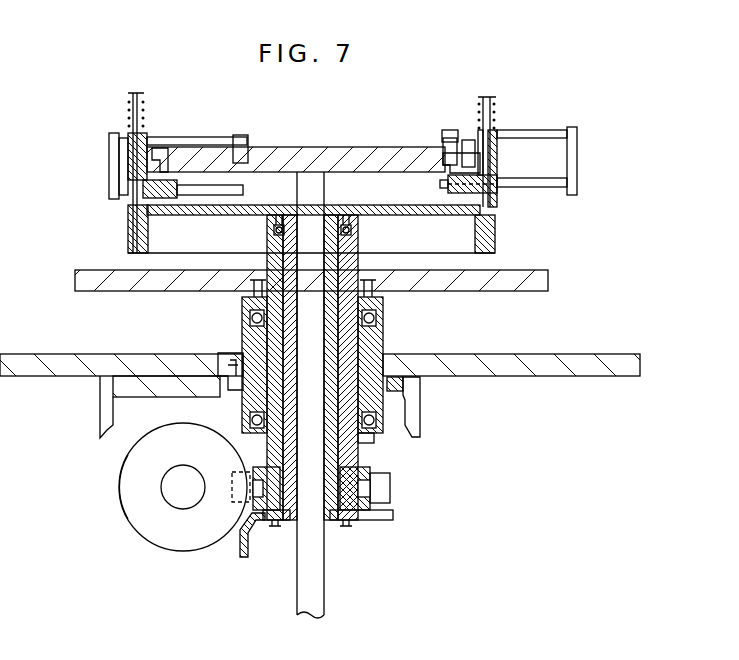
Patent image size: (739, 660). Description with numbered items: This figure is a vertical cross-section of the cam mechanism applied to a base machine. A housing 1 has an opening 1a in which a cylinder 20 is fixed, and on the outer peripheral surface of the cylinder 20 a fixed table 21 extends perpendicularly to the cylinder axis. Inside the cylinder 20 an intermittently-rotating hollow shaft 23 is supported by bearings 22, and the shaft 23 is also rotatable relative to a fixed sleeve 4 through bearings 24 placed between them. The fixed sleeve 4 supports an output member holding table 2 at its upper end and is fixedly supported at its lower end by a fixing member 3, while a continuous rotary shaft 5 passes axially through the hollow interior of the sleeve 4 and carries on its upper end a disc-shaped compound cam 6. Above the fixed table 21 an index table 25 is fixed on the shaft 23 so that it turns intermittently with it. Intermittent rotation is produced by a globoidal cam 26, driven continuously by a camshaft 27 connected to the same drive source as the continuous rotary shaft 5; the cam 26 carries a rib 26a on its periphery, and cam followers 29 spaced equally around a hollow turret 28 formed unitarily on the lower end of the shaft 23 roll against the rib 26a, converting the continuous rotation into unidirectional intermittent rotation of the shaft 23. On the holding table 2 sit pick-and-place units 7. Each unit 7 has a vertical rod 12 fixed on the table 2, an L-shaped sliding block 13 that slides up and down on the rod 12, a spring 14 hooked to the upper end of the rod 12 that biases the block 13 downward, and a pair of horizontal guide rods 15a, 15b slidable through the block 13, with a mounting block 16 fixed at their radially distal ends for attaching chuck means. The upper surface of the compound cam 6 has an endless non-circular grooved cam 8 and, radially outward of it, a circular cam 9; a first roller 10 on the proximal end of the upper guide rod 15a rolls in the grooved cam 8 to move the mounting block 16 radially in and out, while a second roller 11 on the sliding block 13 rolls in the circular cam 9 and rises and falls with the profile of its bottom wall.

The housing 1 is at (142, 390).
The opening 1a is at (248, 350).
The output member holding table 2 is at (487, 233).
The fixing member 3 is at (395, 520).
The fixed hollow sleeve 4 is at (335, 522).
The continuous rotary shaft 5 is at (324, 597).
The compound cam 6 is at (367, 152).
The pick-and-place unit 7 is at (98, 170).
The grooved cam 8 is at (247, 163).
The circular cam 9 is at (172, 168).
The first roller 10 is at (447, 128).
The second roller 11 is at (468, 140).
The vertical rod 12 is at (497, 200).
The L-shaped sliding block 13 is at (497, 158).
The spring 14 is at (491, 118).
The upper guide rod 15a is at (520, 130).
The lower guide rod 15b is at (545, 186).
The mounting block 16 is at (572, 163).
The cylinder 20 is at (385, 336).
The fixed table 21 is at (595, 362).
The bearings 22 is at (396, 410).
The intermittently-rotating hollow shaft 23 is at (359, 438).
The bearings 24 is at (352, 230).
The index table 25 is at (548, 279).
The globoidal cam 26 is at (140, 500).
The rib 26a is at (118, 483).
The camshaft 27 is at (176, 492).
The hollow turret 28 is at (372, 470).
The cam followers 29 is at (392, 488).